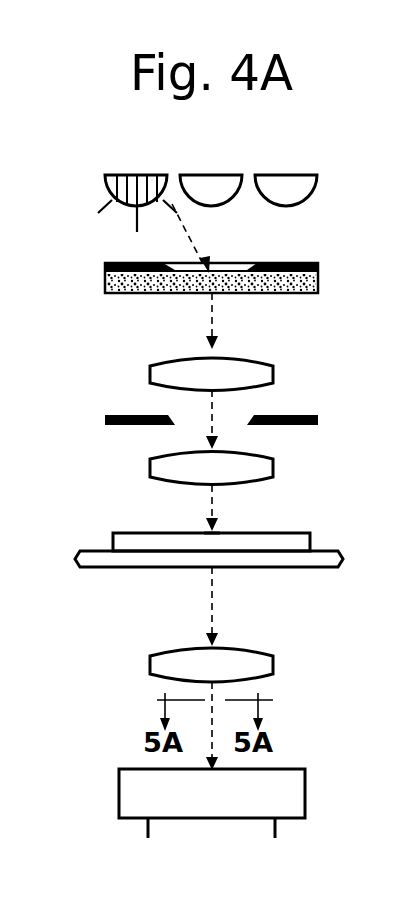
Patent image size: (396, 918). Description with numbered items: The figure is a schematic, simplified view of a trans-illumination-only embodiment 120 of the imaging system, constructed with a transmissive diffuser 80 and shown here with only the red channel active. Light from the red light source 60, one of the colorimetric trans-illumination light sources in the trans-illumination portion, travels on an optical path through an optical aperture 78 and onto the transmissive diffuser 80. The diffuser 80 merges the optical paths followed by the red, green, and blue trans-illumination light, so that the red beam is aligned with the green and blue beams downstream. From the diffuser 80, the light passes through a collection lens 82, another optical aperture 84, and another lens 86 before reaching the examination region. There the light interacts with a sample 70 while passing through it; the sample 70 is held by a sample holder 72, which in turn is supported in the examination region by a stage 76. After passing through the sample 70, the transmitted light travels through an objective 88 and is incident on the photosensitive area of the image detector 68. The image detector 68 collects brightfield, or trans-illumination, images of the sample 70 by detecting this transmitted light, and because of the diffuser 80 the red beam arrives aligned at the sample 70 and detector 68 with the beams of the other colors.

The trans-illumination-only embodiment 120 is at (102, 134).
The red light source 60 is at (107, 189).
The optical aperture 78 is at (300, 263).
The transmissive diffuser 80 is at (305, 293).
The collection lens 82 is at (262, 362).
The optical aperture 84 is at (297, 415).
The lens 86 is at (272, 457).
The sample 70 is at (216, 533).
The sample holder 72 is at (128, 533).
The stage 76 is at (85, 551).
The objective 88 is at (243, 650).
The image detector 68 is at (286, 769).